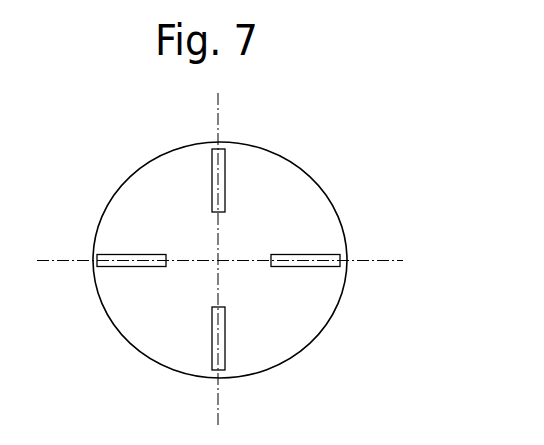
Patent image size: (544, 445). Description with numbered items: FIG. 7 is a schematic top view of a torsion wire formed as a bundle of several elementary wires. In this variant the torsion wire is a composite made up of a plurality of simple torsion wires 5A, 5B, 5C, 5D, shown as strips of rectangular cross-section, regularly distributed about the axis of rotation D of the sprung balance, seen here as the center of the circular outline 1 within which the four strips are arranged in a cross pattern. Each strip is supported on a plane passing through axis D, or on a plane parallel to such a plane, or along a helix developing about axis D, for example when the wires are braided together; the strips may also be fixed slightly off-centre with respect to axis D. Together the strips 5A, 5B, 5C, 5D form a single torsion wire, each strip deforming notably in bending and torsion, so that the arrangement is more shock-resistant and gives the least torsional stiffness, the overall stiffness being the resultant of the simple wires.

The body / disc 1 is at (327, 336).
The torsion wire 5A is at (328, 258).
The torsion wire 5B is at (222, 168).
The torsion wire 5C is at (122, 263).
The torsion wire 5D is at (222, 353).
The axis D is at (218, 259).